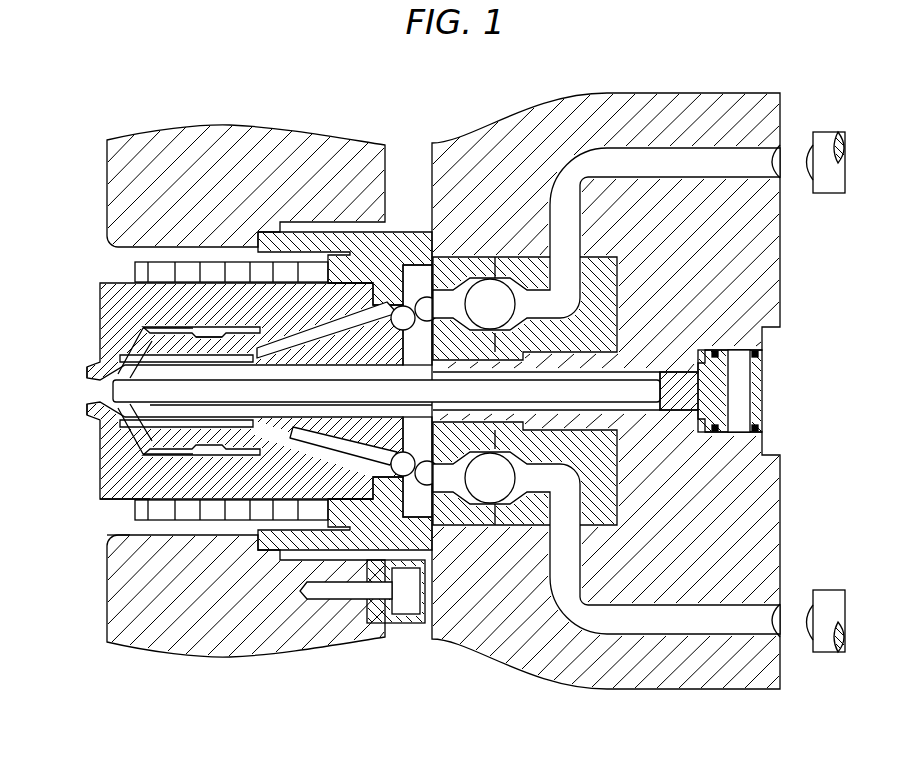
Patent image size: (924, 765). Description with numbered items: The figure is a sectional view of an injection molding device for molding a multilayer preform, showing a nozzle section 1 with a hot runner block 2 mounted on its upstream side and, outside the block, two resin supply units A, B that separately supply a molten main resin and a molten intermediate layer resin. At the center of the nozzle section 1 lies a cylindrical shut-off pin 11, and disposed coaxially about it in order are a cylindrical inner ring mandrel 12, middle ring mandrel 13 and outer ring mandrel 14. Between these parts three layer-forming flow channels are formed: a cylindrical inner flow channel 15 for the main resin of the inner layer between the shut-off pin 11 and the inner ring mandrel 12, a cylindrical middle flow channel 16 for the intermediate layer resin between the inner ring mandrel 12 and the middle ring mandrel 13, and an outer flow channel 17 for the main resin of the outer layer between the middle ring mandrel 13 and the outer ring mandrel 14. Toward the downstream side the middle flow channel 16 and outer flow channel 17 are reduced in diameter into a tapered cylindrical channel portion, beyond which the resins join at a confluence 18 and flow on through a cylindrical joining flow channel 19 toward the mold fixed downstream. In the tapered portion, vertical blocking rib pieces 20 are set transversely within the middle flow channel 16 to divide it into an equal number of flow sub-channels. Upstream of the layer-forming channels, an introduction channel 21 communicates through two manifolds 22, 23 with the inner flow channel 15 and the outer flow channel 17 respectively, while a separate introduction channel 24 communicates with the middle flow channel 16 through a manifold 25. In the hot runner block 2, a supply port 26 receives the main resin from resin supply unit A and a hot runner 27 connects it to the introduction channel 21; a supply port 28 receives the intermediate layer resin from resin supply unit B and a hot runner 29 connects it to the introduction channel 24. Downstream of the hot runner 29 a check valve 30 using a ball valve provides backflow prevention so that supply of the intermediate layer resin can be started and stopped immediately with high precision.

The nozzle section 1 is at (192, 293).
The hot runner block 2 is at (727, 260).
The shut-off pin 11 is at (615, 396).
The inner ring mandrel 12 is at (123, 432).
The middle ring mandrel 13 is at (135, 488).
The outer ring mandrel 14 is at (120, 500).
The inner flow channel 15 is at (143, 345).
The middle flow channel 16 is at (138, 360).
The outer flow channel 17 is at (160, 352).
The confluence 18 is at (110, 367).
The joining flow channel 19 is at (100, 389).
The vertical blocking rib pieces 20 is at (125, 440).
The introduction channel 21 is at (360, 450).
The manifold 22 is at (270, 430).
The manifold 23 is at (195, 430).
The introduction channel 24 is at (352, 333).
The manifold 25 is at (233, 333).
The supply port 26 is at (778, 628).
The hot runner 27 is at (655, 620).
The supply port 28 is at (773, 158).
The hot runner 29 is at (662, 163).
The check valve 30 is at (525, 257).
The resin supply unit A is at (838, 607).
The resin supply unit B is at (833, 175).